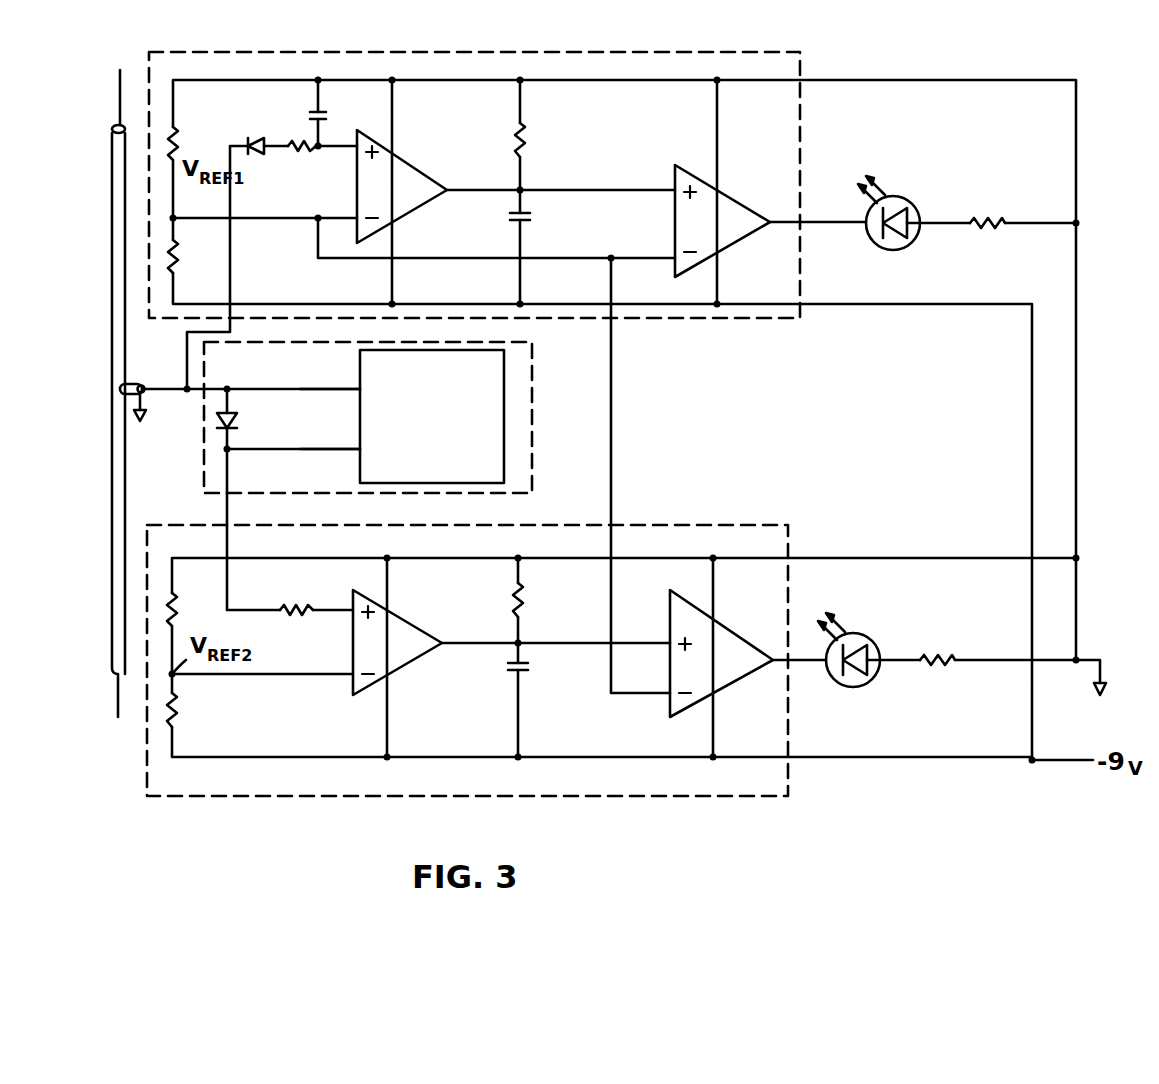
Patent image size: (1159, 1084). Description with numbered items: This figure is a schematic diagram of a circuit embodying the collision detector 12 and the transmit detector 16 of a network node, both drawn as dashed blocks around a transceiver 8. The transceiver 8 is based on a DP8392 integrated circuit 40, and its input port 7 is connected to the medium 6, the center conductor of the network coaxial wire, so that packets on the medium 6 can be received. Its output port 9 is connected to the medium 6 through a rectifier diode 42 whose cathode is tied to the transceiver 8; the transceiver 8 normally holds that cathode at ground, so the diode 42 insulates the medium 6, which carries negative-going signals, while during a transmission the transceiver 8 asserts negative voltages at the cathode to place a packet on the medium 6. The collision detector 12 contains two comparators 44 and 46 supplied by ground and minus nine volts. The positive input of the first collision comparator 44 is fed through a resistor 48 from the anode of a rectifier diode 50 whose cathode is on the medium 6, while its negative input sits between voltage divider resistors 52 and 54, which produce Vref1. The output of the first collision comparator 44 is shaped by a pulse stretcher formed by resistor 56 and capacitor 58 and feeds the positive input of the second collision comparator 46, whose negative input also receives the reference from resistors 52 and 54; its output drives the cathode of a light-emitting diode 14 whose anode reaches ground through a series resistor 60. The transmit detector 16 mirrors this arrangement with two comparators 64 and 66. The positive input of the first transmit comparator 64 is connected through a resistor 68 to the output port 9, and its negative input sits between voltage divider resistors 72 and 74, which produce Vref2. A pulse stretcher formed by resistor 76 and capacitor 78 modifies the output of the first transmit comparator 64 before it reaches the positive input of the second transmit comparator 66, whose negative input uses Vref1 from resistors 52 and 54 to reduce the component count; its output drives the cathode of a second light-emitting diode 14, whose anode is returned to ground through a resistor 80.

The medium 6 is at (119, 112).
The input port 7 is at (366, 391).
The transceiver 8 is at (534, 392).
The output port 9 is at (366, 451).
The collision detector 12 is at (660, 50).
The light-emitting diode 14 is at (918, 213).
The transmit detector 16 is at (698, 525).
The integrated circuit 40 is at (504, 455).
The rectifier diode 42 is at (239, 419).
The first collision comparator 44 is at (413, 172).
The second collision comparator 46 is at (735, 205).
The resistor 48 is at (307, 151).
The rectifier diode 50 is at (255, 141).
The voltage divider resistor 52 is at (180, 142).
The voltage divider resistor 54 is at (179, 262).
The resistor 56 is at (528, 140).
The capacitor 58 is at (531, 220).
The resistor 60 is at (991, 212).
The first transmit comparator 64 is at (414, 626).
The second transmit comparator 66 is at (738, 632).
The resistor 68 is at (297, 604).
The voltage divider resistor 72 is at (178, 606).
The voltage divider resistor 74 is at (178, 714).
The resistor 76 is at (522, 604).
The capacitor 78 is at (530, 667).
The resistor 80 is at (932, 650).